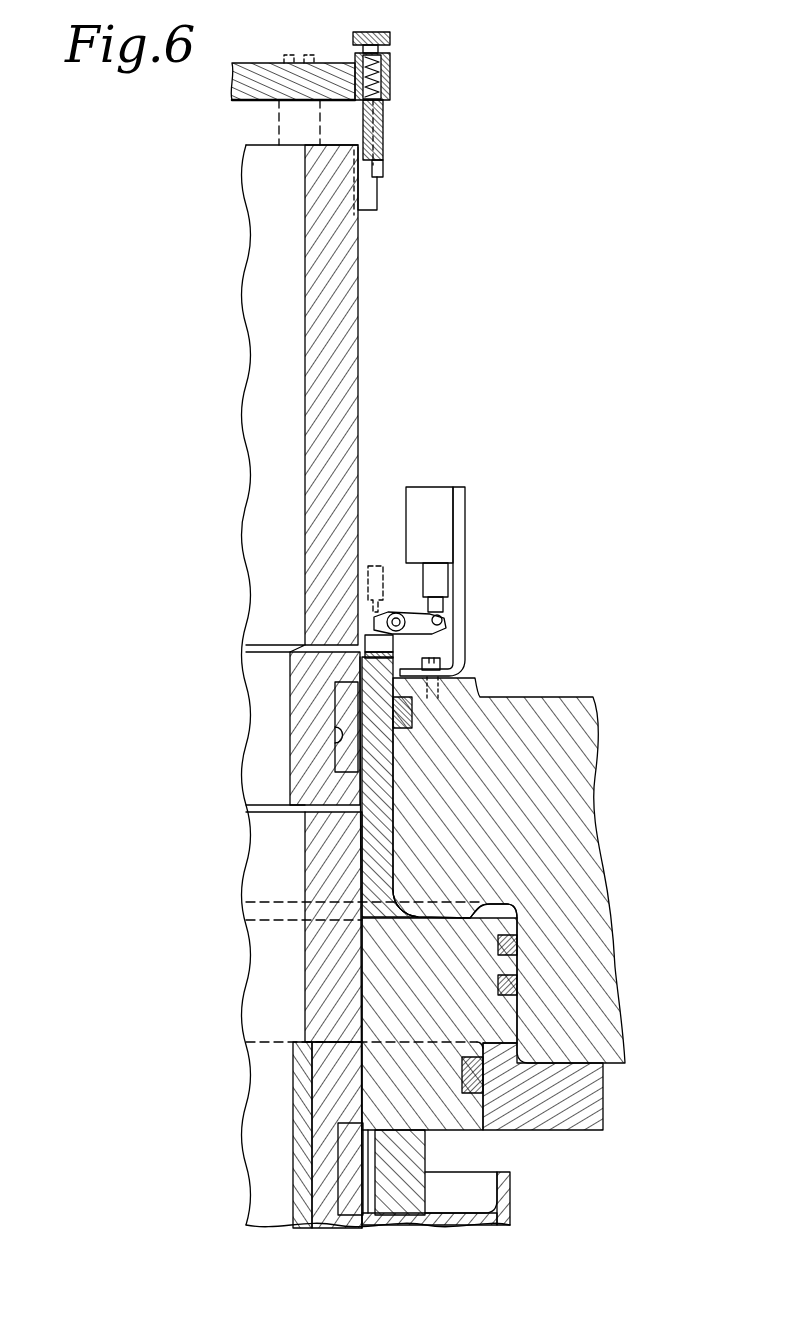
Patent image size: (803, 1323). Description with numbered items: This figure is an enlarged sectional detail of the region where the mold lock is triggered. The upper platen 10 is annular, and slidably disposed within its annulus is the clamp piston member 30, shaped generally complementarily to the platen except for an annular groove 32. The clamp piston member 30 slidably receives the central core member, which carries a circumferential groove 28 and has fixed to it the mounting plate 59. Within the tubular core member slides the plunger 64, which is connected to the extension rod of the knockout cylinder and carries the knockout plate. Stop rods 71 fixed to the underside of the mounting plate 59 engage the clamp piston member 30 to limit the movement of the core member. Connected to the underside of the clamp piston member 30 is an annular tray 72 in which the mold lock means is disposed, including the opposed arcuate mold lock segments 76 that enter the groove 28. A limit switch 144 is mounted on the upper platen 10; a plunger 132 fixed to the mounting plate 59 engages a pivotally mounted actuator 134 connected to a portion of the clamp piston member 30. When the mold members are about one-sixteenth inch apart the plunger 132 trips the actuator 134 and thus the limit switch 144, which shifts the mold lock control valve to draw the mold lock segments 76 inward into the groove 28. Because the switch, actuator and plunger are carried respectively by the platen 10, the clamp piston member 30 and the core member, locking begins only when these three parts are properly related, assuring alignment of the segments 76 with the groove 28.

The upper platen 10 is at (593, 742).
The circumferential groove 28 is at (335, 735).
The clamp piston member 30 is at (510, 965).
The annular groove 32 is at (505, 907).
The mounting plate 59 is at (392, 70).
The plunger 64 is at (293, 1146).
The stop rods 71 is at (380, 200).
The annular tray 72 is at (510, 1200).
The mold lock segments 76 is at (420, 1152).
The plunger 132 is at (382, 168).
The actuator 134 is at (418, 631).
The limit switch 144 is at (446, 514).